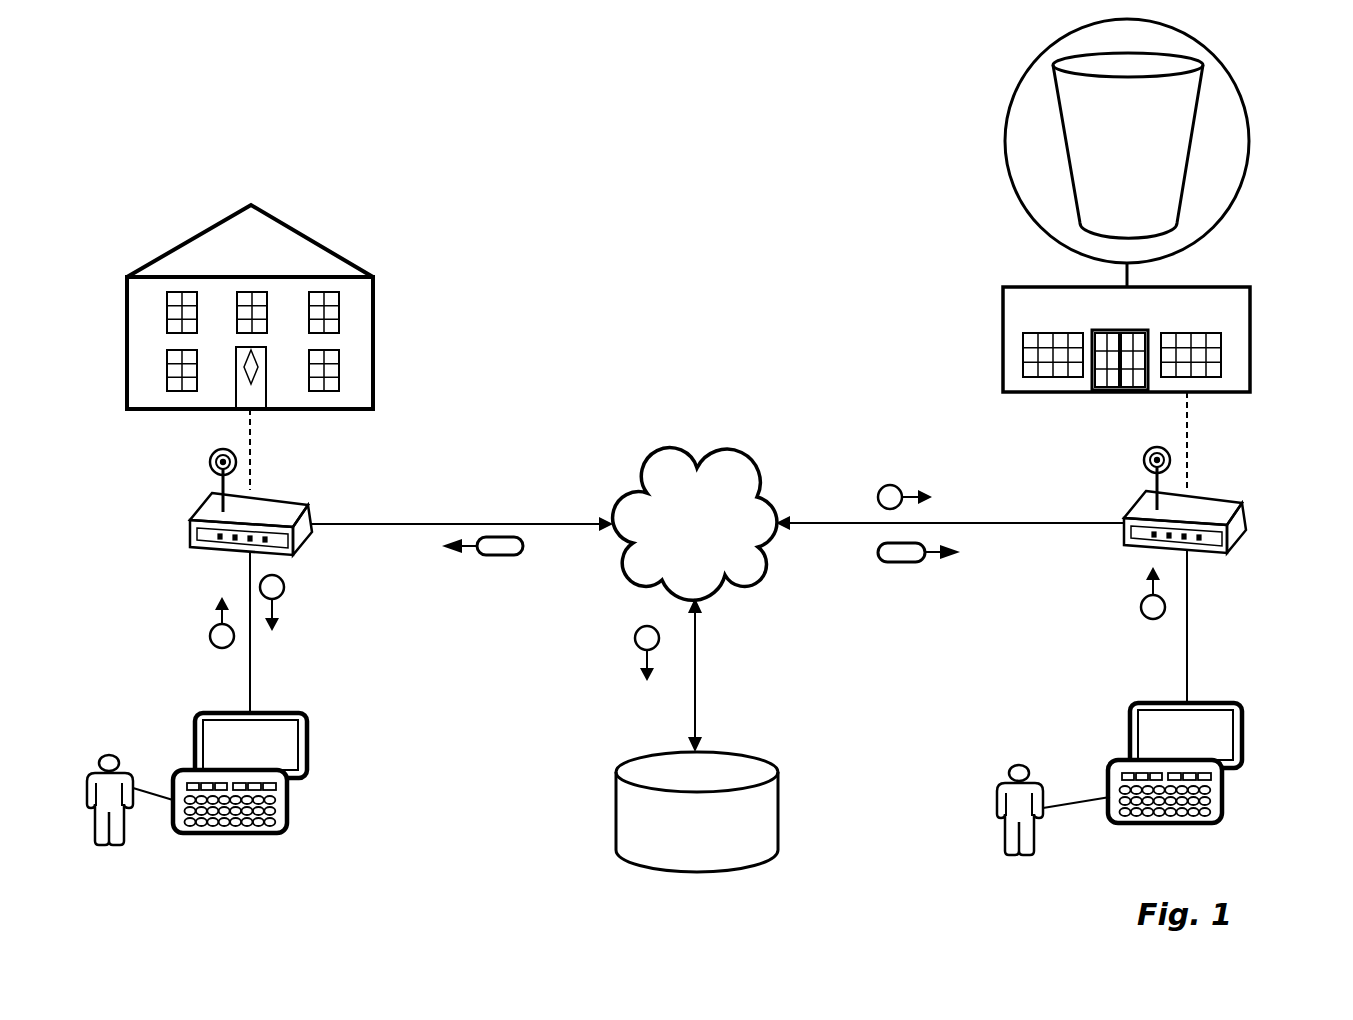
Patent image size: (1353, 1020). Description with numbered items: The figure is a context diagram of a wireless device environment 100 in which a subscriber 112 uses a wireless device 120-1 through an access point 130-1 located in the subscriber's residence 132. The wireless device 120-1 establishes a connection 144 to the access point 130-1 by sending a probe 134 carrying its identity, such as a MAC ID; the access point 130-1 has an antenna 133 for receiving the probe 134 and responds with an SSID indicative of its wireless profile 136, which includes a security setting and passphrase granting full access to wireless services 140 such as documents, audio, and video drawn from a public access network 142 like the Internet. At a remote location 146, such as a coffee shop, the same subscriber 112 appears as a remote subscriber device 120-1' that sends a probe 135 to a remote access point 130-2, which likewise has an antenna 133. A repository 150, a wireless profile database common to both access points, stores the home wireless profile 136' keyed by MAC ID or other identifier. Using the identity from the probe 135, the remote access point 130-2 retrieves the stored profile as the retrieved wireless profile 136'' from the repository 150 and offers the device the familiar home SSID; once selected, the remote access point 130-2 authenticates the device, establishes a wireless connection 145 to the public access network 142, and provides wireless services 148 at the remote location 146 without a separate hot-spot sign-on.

The wireless device environment 100 is at (510, 134).
The subscriber 112 is at (110, 845).
The wireless device 120-1 is at (270, 784).
The remote subscriber device 120-1' is at (1213, 787).
The access point 130-1 is at (296, 502).
The remote access point 130-2 is at (1272, 482).
The residence 132 is at (373, 277).
The antenna 133 is at (220, 487).
The probe 134 is at (210, 637).
The probe 135 is at (1142, 613).
The wireless profile 136 is at (307, 603).
The wireless profile 136' is at (607, 651).
The retrieved wireless profile 136'' is at (891, 467).
The wireless services 140 is at (507, 557).
The public access network 142 is at (694, 467).
The connection 144 is at (252, 680).
The wireless connection 145 is at (1187, 630).
The remote location 146 is at (1002, 340).
The wireless services 148 is at (900, 563).
The repository 150 is at (780, 790).